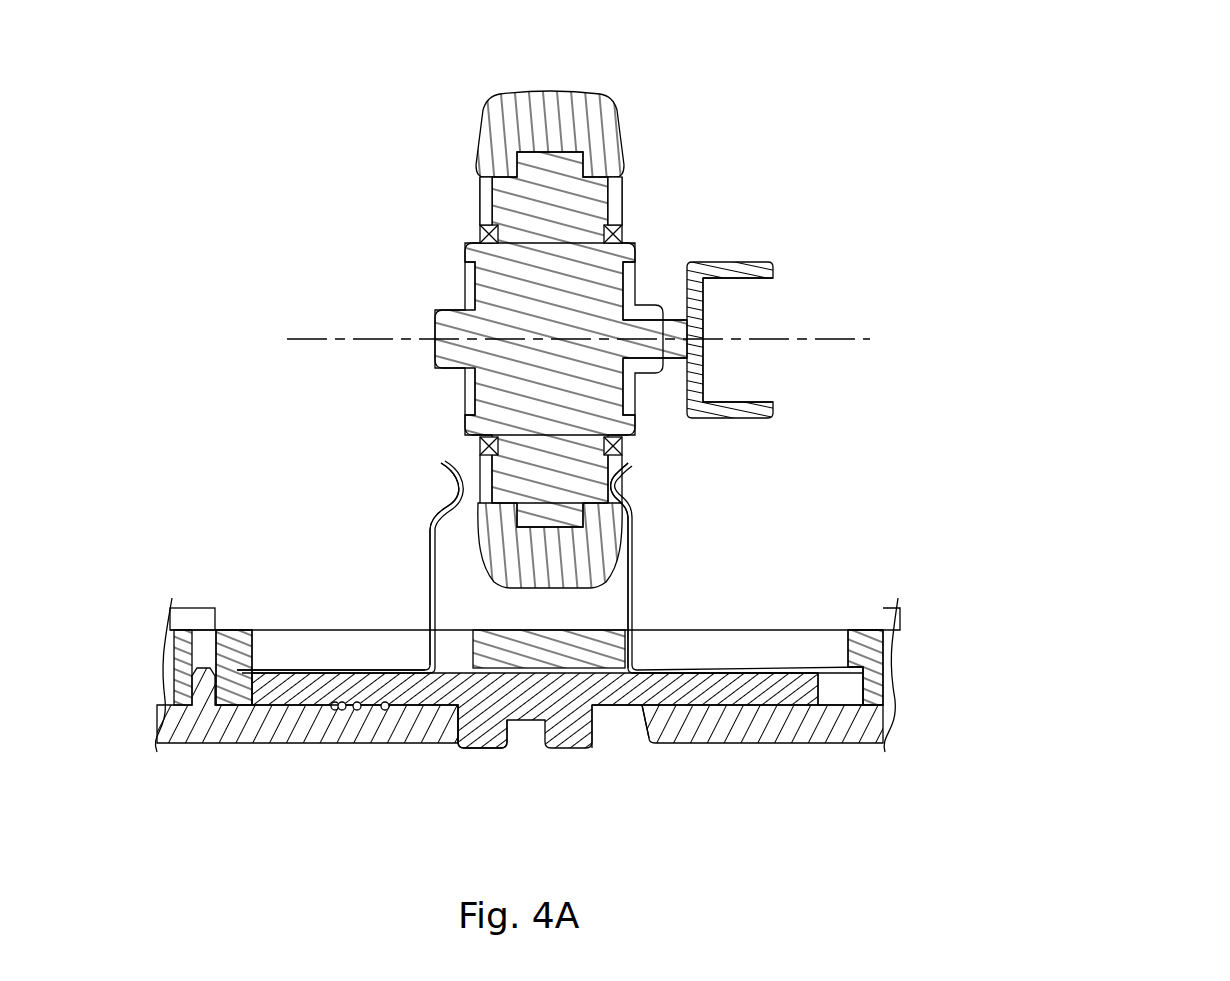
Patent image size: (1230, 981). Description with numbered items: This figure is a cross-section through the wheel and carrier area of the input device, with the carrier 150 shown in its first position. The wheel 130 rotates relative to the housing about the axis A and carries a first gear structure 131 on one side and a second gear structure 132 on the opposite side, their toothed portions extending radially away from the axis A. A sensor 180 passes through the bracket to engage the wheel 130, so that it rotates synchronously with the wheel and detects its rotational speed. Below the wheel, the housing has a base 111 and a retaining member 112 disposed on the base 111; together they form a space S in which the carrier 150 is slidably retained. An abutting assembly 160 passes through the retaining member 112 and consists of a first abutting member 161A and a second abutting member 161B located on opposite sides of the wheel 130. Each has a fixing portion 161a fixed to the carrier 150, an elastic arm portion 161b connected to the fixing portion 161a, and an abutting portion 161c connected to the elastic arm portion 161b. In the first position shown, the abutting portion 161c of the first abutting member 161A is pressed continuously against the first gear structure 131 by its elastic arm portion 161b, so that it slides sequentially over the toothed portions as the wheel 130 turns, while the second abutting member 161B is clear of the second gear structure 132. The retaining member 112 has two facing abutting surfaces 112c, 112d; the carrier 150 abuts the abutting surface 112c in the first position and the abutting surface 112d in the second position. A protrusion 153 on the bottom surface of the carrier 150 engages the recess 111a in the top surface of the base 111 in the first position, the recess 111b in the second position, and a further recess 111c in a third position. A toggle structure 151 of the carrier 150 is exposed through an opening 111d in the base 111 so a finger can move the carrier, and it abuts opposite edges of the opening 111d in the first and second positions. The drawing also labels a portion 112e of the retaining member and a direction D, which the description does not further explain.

The wheel 130 is at (571, 103).
The first gear structure 131 is at (628, 193).
The second gear structure 132 is at (474, 193).
The sensor 180 is at (765, 262).
The abutting assembly 160 is at (1150, 113).
The first abutting member 161A is at (815, 423).
The second abutting member 161B is at (250, 423).
The fixing portion 161a is at (385, 668).
The elastic arm portion 161b is at (430, 557).
The abutting portion 161c is at (450, 492).
The retaining member 112 is at (232, 643).
The abutting surface 112c is at (245, 697).
The abutting surface 112d is at (857, 690).
The frame block 112e is at (563, 668).
The carrier 150 is at (392, 690).
The toggle structure 151 is at (482, 727).
The protrusion 153 is at (333, 708).
The base 111 is at (737, 718).
The recess 111a is at (342, 710).
The recess 111b is at (385, 710).
The recess 111c is at (357, 710).
The opening 111d is at (627, 748).
The space S is at (823, 658).
The axis A is at (310, 338).
The direction D is at (324, 388).